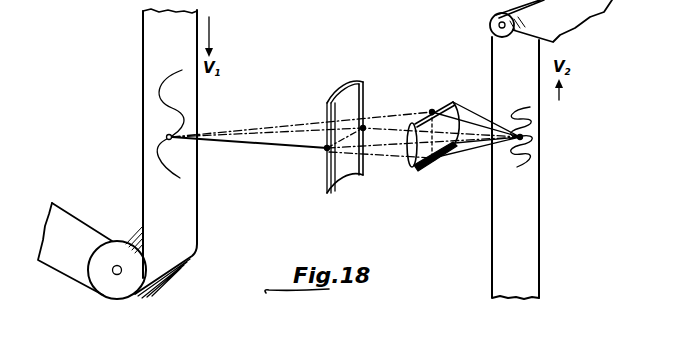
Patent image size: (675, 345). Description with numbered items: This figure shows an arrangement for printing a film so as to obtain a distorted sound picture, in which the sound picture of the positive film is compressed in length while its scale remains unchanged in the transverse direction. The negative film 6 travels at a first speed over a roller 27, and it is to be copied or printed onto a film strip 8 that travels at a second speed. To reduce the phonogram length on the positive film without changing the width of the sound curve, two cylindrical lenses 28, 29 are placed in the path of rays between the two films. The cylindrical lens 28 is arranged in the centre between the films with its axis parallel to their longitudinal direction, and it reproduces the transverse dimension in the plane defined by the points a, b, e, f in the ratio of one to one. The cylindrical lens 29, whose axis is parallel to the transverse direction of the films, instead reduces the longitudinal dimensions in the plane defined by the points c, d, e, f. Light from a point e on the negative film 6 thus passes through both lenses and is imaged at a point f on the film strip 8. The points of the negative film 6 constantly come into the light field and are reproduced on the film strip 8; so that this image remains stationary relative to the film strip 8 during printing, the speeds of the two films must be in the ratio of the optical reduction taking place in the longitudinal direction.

The negative film 6 is at (190, 216).
The film strip 8 is at (500, 240).
The roller 27 is at (111, 250).
The cylindrical lens 28 is at (351, 184).
The cylindrical lens 29 is at (406, 162).
The point a is at (325, 150).
The point b is at (366, 126).
The point c is at (432, 110).
The point d is at (433, 160).
The point e is at (166, 138).
The point f is at (522, 137).